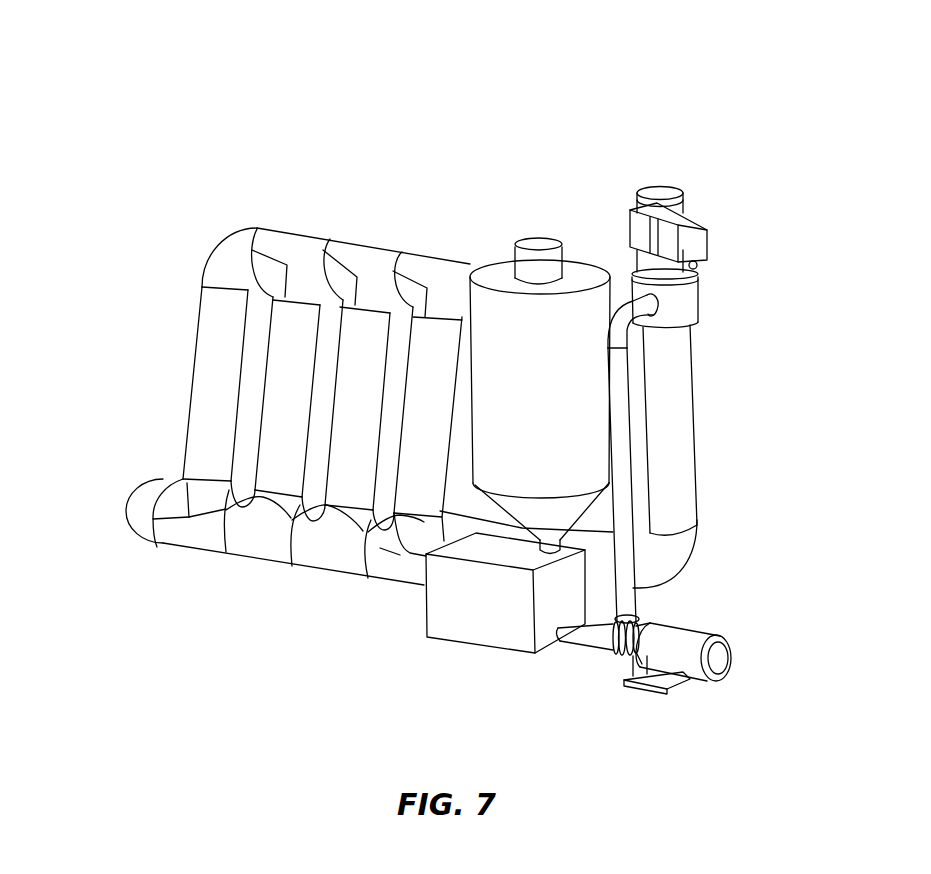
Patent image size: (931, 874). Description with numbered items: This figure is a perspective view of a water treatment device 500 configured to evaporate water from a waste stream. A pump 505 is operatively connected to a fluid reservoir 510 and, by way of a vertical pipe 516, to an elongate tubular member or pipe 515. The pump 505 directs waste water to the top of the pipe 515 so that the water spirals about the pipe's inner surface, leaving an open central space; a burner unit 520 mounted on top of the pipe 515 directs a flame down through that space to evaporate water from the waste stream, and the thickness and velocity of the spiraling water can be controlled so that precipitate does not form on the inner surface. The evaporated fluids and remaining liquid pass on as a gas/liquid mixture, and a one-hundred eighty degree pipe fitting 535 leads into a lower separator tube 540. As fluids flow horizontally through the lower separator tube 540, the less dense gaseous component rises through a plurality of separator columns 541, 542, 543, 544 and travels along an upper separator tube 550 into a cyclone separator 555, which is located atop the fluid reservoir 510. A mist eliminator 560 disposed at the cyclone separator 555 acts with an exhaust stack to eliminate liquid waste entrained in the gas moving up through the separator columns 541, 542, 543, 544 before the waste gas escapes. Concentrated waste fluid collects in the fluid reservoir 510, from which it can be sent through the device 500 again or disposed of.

The water treatment device 500 is at (683, 84).
The pump 505 is at (690, 668).
The fluid reservoir 510 is at (467, 615).
The elongate tubular member or pipe 515 is at (680, 453).
The vertical pipe 516 is at (627, 605).
The burner unit 520 is at (668, 216).
The one-hundred eighty degree pipe fitting 535 is at (147, 498).
The lower separator tube 540 is at (257, 543).
The separator column 541 is at (208, 348).
The separator column 542 is at (292, 350).
The separator column 543 is at (350, 347).
The separator column 544 is at (435, 347).
The upper separator tube 550 is at (363, 255).
The cyclone separator 555 is at (553, 395).
The mist eliminator 560 is at (543, 263).